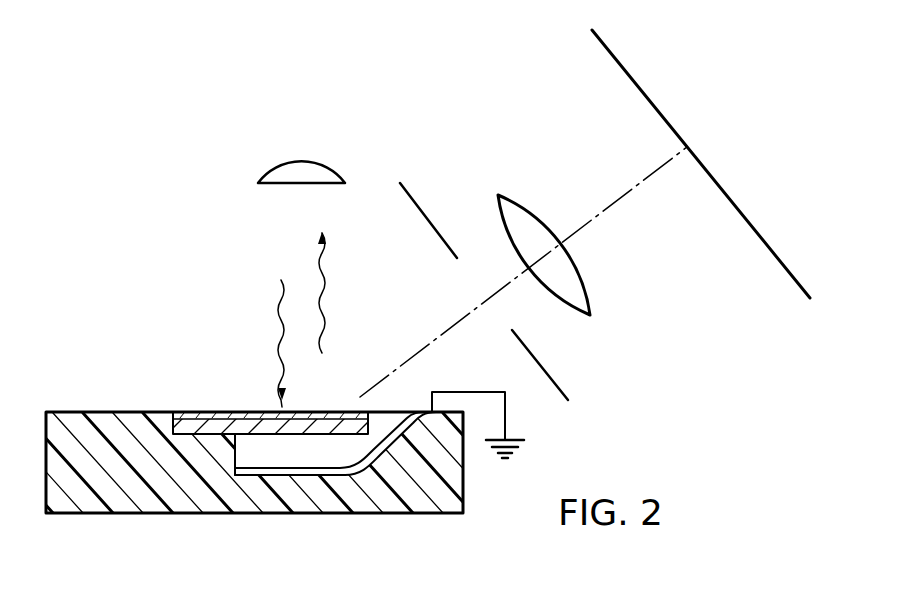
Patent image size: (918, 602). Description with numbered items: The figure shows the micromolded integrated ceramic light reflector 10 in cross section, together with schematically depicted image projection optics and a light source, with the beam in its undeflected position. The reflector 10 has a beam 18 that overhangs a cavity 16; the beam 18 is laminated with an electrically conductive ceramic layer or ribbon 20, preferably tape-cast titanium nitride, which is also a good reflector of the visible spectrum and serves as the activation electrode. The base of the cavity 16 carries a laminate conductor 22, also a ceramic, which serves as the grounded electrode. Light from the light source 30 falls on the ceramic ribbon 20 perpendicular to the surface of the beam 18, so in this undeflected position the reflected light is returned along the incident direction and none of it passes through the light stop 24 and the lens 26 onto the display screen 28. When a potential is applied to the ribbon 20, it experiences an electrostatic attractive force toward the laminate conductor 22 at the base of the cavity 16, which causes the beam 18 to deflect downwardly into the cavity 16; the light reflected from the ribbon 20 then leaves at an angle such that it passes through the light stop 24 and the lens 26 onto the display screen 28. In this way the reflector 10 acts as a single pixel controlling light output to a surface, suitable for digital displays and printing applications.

The reflector 10 is at (142, 387).
The cavity 16 is at (292, 455).
The beam 18 is at (310, 434).
The ceramic ribbon 20 is at (329, 412).
The laminate conductor 22 is at (366, 475).
The light stop 24 is at (555, 380).
The lens 26 is at (580, 277).
The display screen 28 is at (695, 155).
The light source 30 is at (318, 172).